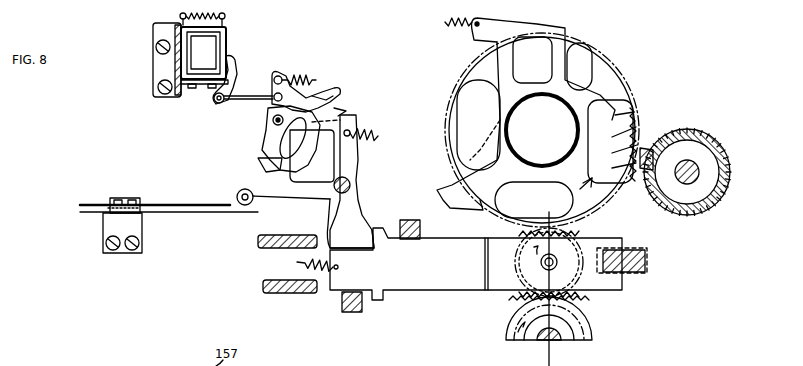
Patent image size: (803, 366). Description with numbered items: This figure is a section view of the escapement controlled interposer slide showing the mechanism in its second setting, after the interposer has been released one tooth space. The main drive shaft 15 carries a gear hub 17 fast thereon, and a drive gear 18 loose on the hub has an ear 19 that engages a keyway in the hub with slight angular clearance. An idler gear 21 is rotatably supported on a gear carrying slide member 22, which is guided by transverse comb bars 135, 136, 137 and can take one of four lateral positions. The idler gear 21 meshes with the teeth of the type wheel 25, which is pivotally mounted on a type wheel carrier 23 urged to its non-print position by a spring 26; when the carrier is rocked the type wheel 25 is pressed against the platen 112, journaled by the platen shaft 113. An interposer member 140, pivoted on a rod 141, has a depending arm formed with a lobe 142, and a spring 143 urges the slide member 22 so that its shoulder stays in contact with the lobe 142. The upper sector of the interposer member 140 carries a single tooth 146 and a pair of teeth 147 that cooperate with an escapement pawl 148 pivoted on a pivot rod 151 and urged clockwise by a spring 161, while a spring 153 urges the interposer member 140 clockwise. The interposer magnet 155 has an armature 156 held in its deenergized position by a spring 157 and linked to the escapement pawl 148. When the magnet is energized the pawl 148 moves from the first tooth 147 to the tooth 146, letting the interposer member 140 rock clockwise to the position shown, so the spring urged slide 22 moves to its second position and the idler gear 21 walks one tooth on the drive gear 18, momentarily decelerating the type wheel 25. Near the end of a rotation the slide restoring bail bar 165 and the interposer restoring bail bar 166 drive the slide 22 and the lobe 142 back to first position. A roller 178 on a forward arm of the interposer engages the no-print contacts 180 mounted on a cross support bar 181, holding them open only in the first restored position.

The spring 157 is at (224, 14).
The interposer magnet 155 is at (212, 43).
The armature 156 is at (233, 65).
The spring 161 is at (297, 77).
The escapement pawl 148 is at (318, 90).
The pair of teeth 147 is at (346, 111).
The pivot rod 151 is at (272, 118).
The spring 153 is at (378, 137).
The single tooth 146 is at (263, 167).
The interposer member 140 is at (338, 158).
The rod 141 is at (352, 184).
The lobe 142 is at (360, 222).
The roller 178 is at (236, 190).
The cross support bar 181 is at (124, 203).
The no-print contacts 180 is at (222, 213).
The interposer restoring bail bar 166 is at (287, 235).
The spring 143 is at (307, 263).
The slide restoring bail bar 165 is at (285, 291).
The transverse comb bar 137 is at (350, 313).
The transverse comb bar 136 is at (420, 228).
The gear carrying slide member 22 is at (433, 290).
The idler gear 21 is at (590, 280).
The ear 19 is at (525, 308).
The drive gear 18 is at (583, 317).
The gear hub 17 is at (570, 338).
The main drive shaft 15 is at (540, 340).
The transverse comb bar 135 is at (648, 260).
The type wheel 25 is at (622, 82).
The type wheel carrier 23 is at (450, 193).
The spring 26 is at (448, 22).
The platen 112 is at (708, 203).
The platen shaft 113 is at (683, 167).